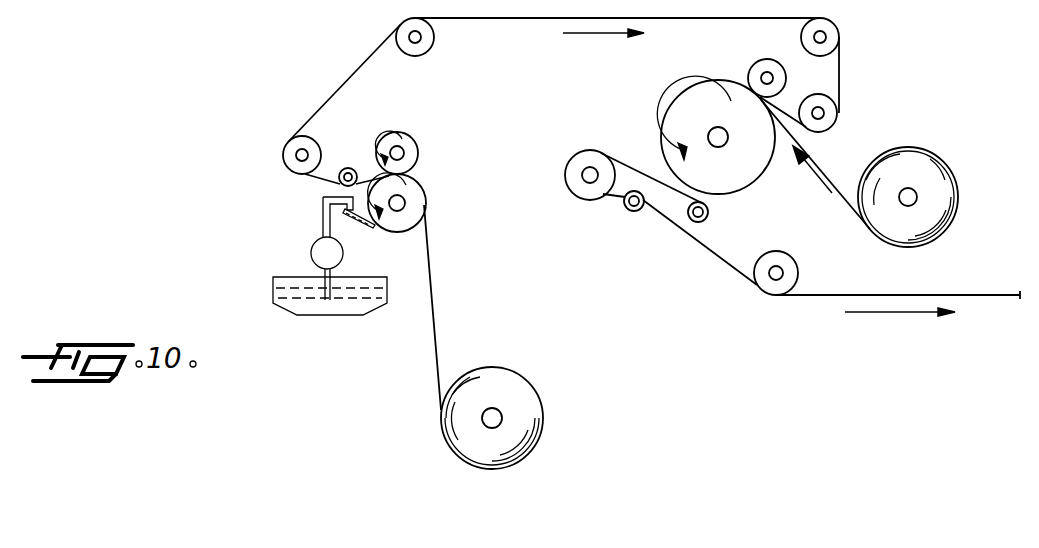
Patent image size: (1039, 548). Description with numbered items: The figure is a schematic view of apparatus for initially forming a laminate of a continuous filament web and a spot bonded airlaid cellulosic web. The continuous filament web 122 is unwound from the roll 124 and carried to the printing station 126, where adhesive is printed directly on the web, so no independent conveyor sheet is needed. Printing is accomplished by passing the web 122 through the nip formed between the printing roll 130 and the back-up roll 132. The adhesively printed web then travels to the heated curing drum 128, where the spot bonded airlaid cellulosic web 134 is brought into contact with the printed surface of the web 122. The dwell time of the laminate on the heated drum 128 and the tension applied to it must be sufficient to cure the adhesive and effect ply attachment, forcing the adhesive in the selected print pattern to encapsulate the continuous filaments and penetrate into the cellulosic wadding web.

The continuous filament web 122 is at (433, 298).
The roll 124 is at (520, 397).
The printing station 126 is at (306, 238).
The heated curing drum 128 is at (677, 110).
The printing roll 130 is at (383, 232).
The back-up roll 132 is at (410, 138).
The spot bonded airlaid cellulosic web 134 is at (820, 165).